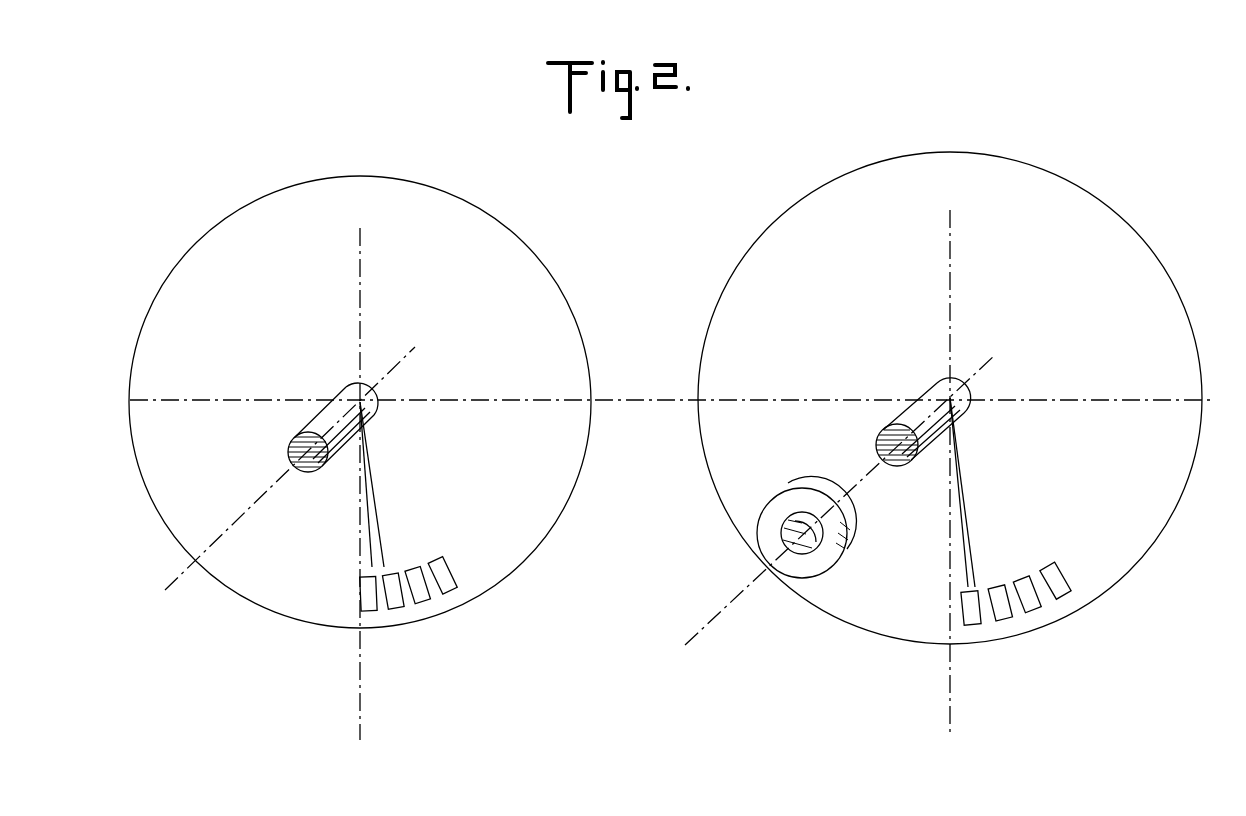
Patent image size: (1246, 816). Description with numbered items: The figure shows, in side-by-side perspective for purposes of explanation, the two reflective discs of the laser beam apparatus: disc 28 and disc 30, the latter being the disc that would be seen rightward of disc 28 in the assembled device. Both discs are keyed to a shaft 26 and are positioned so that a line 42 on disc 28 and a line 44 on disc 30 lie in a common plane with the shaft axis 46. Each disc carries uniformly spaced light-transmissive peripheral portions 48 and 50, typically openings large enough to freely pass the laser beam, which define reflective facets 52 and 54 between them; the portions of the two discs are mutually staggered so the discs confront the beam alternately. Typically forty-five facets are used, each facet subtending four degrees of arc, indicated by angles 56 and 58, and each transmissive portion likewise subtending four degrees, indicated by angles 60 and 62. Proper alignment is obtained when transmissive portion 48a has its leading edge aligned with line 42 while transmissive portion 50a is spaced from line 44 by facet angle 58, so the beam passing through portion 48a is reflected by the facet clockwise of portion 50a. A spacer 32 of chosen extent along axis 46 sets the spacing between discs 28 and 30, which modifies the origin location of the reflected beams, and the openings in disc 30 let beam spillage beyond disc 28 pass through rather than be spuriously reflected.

The shaft 26 is at (318, 425).
The disc 28 is at (483, 222).
The disc 30 is at (1100, 218).
The spacer 32 is at (796, 490).
The line 42 is at (358, 728).
The line 44 is at (948, 728).
The shaft axis 46 is at (229, 522).
The light-transmissive peripheral portions 48 is at (390, 573).
The transmissive portion 48a is at (369, 612).
The light-transmissive peripheral portions 50 is at (1045, 565).
The transmissive portion 50a is at (972, 625).
The reflective facets 52 is at (383, 606).
The reflective facets 54 is at (985, 620).
The facet angle 56 is at (365, 527).
The facet angle 58 is at (958, 545).
The transmissive portion angle 60 is at (374, 545).
The transmissive portion angle 62 is at (953, 525).